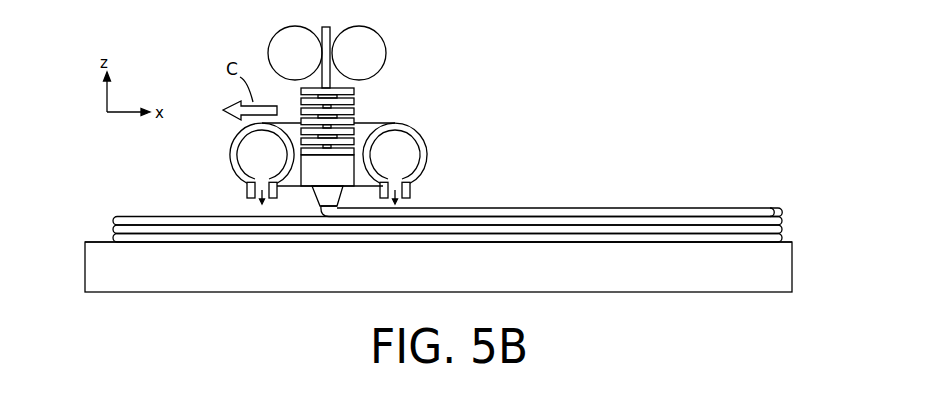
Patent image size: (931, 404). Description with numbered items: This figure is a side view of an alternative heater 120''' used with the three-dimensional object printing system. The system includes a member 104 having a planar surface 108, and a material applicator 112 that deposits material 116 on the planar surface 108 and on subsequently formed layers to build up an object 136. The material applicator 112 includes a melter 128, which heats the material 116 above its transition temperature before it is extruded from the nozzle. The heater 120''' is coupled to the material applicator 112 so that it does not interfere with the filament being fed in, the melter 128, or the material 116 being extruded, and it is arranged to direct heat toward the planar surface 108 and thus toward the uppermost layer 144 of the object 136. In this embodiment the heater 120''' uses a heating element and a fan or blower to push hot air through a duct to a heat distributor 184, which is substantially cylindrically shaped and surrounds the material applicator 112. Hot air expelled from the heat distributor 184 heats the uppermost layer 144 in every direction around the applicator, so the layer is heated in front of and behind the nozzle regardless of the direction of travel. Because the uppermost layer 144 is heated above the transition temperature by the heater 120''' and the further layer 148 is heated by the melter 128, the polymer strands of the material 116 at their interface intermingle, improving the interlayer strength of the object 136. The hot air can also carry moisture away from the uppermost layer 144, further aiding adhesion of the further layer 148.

The member 104 is at (100, 272).
The planar surface 108 is at (96, 236).
The material applicator 112 is at (360, 93).
The material 116 is at (131, 215).
The heater 120''' is at (437, 147).
The melter 128 is at (338, 160).
The object 136 is at (776, 196).
The uppermost layer 144 is at (183, 215).
The further layer 148 is at (483, 207).
The heat distributor 184 is at (432, 157).